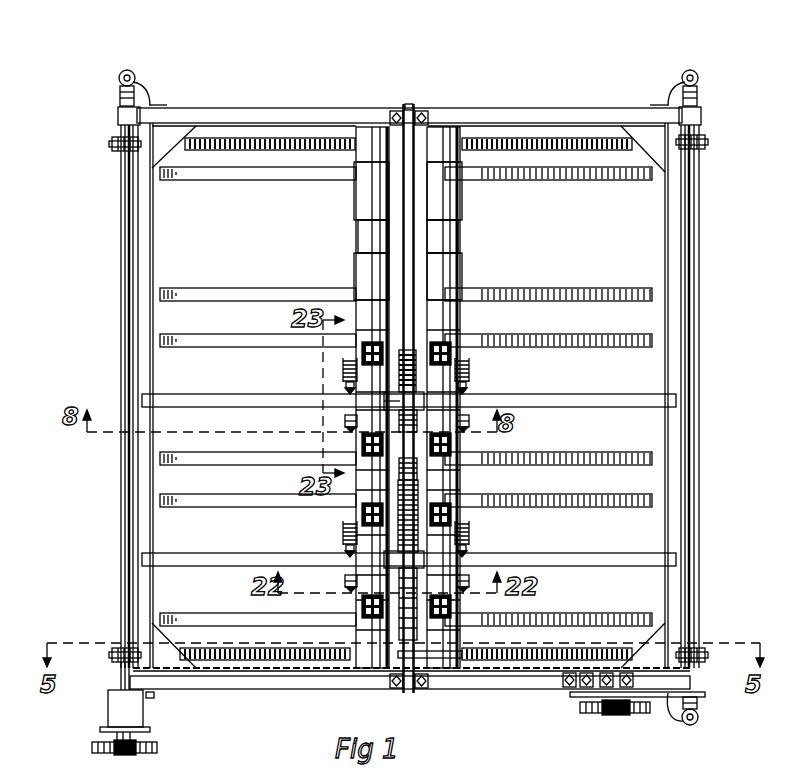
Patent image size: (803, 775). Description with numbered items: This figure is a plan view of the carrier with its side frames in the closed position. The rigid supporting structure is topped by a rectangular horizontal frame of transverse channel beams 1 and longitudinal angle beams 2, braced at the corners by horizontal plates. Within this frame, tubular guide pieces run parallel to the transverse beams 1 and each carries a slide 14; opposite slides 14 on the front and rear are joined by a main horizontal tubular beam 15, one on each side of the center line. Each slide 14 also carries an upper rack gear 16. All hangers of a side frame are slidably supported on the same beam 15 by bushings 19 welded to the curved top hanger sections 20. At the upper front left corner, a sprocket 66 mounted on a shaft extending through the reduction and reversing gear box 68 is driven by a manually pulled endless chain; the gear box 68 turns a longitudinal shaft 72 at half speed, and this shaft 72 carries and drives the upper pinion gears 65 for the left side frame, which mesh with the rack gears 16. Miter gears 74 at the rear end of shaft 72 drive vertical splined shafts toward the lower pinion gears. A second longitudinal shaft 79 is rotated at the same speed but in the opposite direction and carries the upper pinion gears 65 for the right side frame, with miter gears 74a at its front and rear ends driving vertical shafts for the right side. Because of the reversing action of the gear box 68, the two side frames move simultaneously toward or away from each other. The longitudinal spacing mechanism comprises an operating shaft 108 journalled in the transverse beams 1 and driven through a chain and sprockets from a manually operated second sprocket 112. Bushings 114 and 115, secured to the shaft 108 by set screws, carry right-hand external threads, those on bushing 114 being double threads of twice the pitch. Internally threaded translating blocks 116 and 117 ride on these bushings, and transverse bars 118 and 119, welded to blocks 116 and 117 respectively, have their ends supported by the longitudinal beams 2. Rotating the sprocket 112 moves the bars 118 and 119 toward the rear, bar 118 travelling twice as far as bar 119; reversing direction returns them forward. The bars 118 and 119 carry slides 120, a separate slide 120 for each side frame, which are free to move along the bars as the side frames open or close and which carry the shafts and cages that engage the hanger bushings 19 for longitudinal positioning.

The transverse channel beams 1 is at (528, 107).
The longitudinal angle beams 2 is at (148, 417).
The slide 14 is at (366, 142).
The main horizontal tubular beam 15 is at (362, 237).
The upper rack gear 16 is at (254, 149).
The bushings 19 is at (358, 204).
The curved top hanger section 20 is at (244, 291).
The upper pinion gears 65 is at (112, 143).
The sprocket 66 is at (157, 747).
The reduction and reversing gear box 68 is at (108, 709).
The longitudinal shaft 72 is at (122, 590).
The miter gears 74 is at (117, 79).
The miter gears 74a is at (700, 80).
The shaft 79 is at (700, 500).
The operating shaft 108 is at (402, 145).
The second sprocket 112 is at (601, 712).
The bushing 114 is at (452, 480).
The bushing 115 is at (413, 347).
The translating block 116 is at (347, 579).
The translating block 117 is at (362, 406).
The transverse bar 118 is at (548, 558).
The transverse bar 119 is at (221, 397).
The slides 120 is at (451, 401).